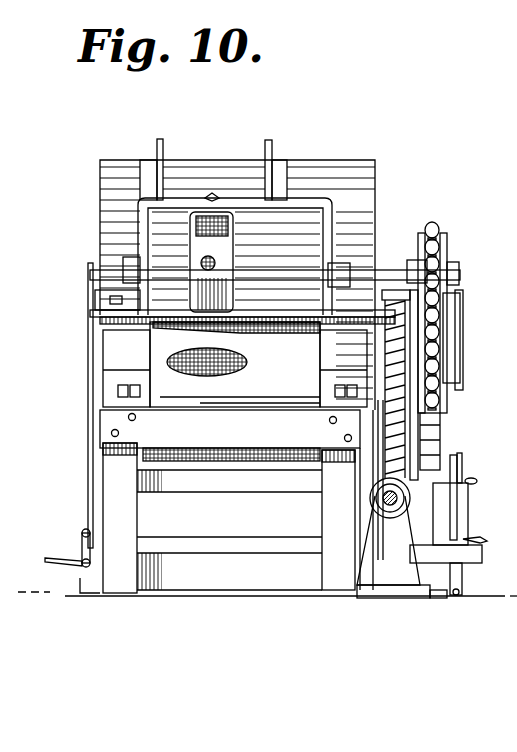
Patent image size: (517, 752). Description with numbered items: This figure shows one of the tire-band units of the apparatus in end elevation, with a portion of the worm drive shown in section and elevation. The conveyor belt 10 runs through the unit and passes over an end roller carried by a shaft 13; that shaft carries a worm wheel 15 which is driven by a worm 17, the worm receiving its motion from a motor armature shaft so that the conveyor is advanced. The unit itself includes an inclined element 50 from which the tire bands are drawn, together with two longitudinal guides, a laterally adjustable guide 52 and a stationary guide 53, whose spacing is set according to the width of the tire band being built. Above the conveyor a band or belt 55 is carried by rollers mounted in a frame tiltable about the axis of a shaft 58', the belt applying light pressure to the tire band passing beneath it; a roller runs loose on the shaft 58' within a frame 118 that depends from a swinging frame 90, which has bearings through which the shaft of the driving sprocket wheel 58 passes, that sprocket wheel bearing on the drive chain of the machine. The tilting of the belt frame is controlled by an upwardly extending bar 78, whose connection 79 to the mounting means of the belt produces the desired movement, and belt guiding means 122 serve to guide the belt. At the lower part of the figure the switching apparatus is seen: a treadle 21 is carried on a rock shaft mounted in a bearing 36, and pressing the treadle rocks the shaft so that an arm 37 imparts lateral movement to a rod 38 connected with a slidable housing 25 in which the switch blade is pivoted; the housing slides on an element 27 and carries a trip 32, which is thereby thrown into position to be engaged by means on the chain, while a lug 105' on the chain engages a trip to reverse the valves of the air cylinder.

The conveyor belt 10 is at (255, 463).
The shaft 13 is at (391, 506).
The worm wheel 15 is at (384, 349).
The worm 17 is at (370, 504).
The treadle 21 is at (50, 562).
The housing 25 is at (460, 515).
The element 27 is at (477, 563).
The trip 32 is at (462, 465).
The bearing 36 is at (70, 578).
The arm 37 is at (81, 545).
The rod 38 is at (236, 538).
The inclined element 50 is at (364, 184).
The guide 52 is at (158, 145).
The guide 53 is at (272, 145).
The belt 55 is at (211, 262).
The sprocket wheel 58 is at (442, 347).
The shaft 58' is at (275, 272).
The bar 78 is at (88, 460).
The connection 79 is at (86, 286).
The swinging frame 90 is at (309, 198).
The lug 105' is at (476, 483).
The frame 118 is at (182, 305).
The belt guiding means 122 is at (108, 318).